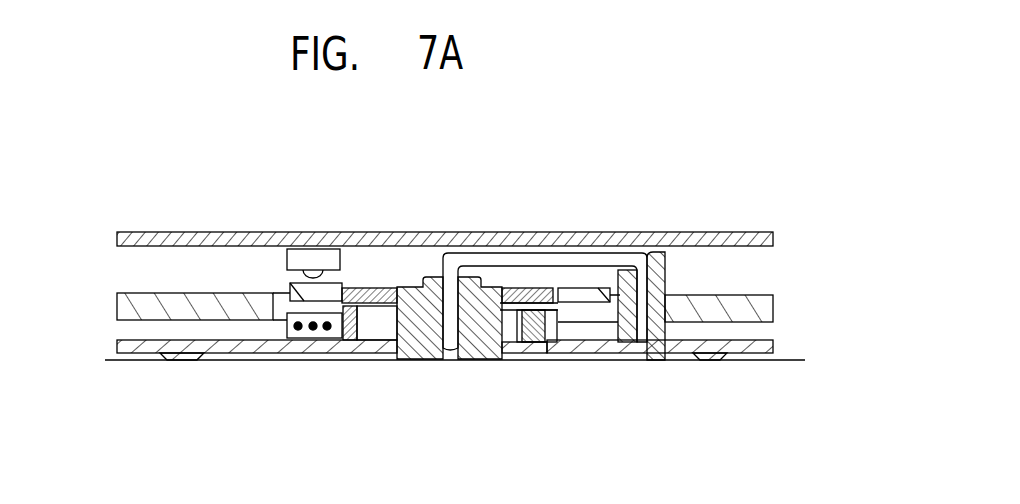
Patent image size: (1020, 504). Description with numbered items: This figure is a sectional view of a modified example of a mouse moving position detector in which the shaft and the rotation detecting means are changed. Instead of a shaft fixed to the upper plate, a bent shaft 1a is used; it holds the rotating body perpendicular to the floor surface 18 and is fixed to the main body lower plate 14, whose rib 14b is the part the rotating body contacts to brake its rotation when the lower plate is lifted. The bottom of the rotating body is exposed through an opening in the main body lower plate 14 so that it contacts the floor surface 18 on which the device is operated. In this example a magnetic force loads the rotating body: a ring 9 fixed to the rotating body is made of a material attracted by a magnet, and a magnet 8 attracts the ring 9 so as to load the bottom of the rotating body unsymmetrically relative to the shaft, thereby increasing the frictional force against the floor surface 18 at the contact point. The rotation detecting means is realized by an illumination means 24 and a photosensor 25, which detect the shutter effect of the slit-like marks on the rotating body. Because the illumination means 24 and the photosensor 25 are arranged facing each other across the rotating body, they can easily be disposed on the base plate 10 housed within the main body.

The bent shaft 1a is at (540, 259).
The illumination means 24 is at (318, 248).
The photosensor 25 is at (313, 340).
The ring 9 is at (365, 342).
The magnet 8 is at (522, 361).
The base plate 10 is at (750, 293).
The main body lower plate 14 is at (748, 361).
The rib 14b is at (664, 262).
The floor surface 18 is at (785, 358).